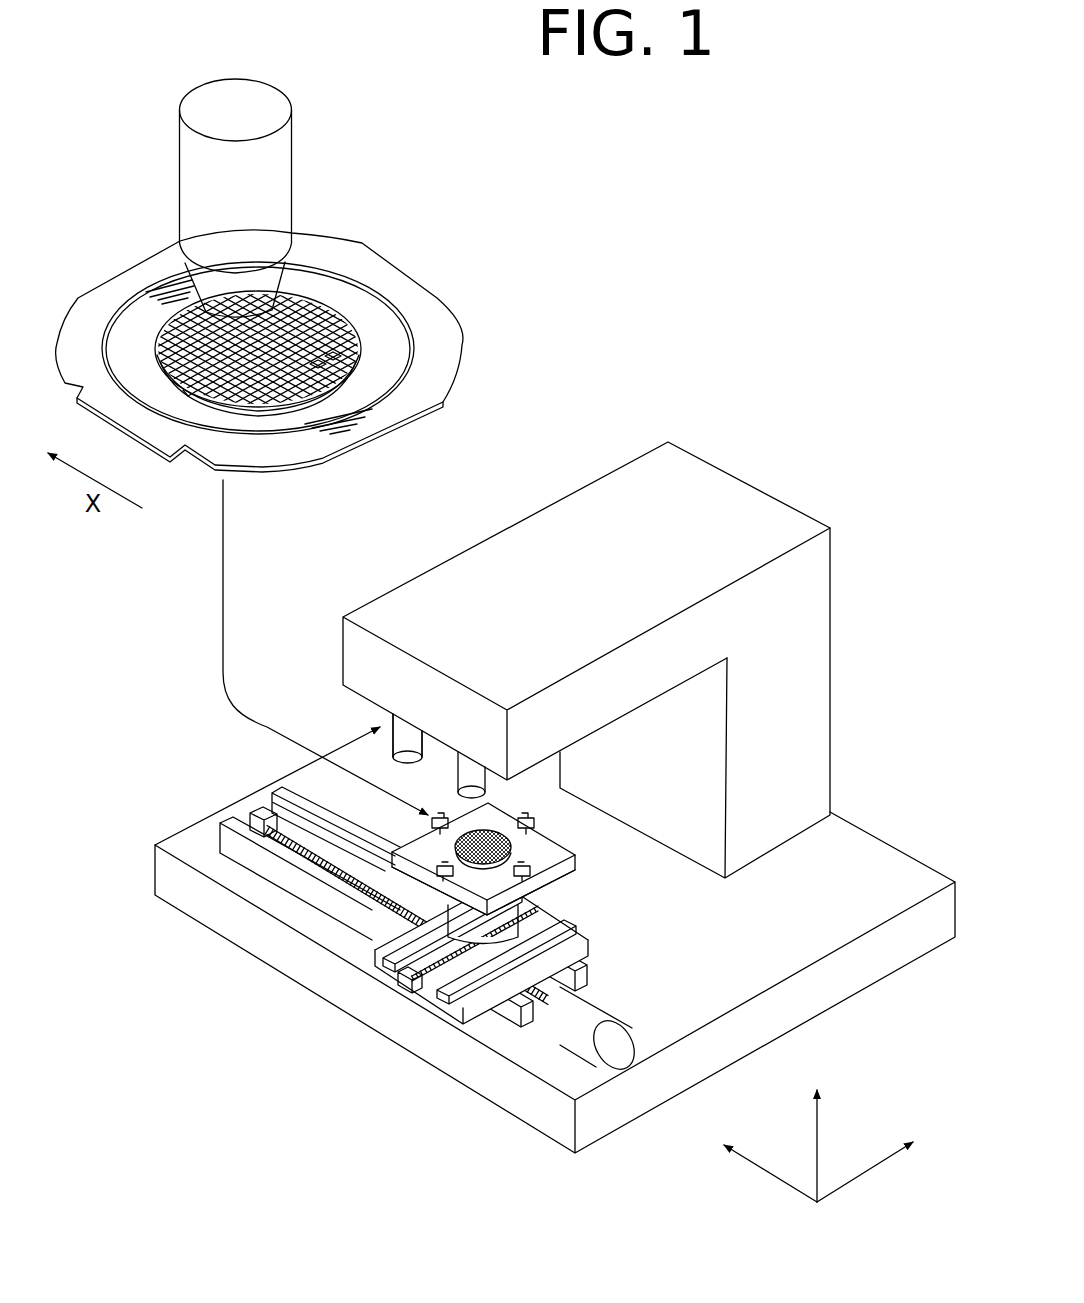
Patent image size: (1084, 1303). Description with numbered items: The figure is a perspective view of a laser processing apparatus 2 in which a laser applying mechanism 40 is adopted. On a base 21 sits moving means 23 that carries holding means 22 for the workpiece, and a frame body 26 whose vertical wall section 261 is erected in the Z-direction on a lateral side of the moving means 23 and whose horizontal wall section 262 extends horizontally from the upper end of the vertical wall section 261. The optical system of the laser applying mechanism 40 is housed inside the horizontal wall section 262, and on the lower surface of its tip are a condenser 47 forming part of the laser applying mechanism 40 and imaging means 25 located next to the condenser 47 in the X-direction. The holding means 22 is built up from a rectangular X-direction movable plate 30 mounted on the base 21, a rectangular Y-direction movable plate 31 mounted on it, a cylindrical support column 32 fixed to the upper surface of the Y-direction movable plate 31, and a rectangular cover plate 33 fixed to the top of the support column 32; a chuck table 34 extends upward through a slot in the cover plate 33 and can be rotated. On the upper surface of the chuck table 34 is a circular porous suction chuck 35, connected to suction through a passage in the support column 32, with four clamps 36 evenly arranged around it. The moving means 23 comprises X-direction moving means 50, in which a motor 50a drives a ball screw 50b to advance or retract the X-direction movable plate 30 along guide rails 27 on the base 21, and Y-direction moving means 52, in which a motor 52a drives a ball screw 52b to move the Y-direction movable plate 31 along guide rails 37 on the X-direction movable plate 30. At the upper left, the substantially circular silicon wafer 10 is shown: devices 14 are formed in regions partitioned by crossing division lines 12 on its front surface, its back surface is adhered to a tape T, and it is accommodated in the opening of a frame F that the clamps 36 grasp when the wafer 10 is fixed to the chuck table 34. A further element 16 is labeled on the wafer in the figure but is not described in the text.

The laser processing apparatus 2 is at (556, 805).
The wafer 10 is at (261, 358).
The division lines (streets) 12 is at (320, 382).
The devices 14 is at (320, 318).
The outer peripheral edge of wafer 16 is at (262, 413).
The frame F is at (433, 327).
The protective tape (dicing tape) T is at (387, 370).
The base 21 is at (880, 860).
The holding means 22 is at (453, 962).
The moving means 23 is at (453, 903).
The imaging means 25 is at (466, 782).
The frame body 26 is at (632, 643).
The vertical wall section 261 is at (810, 657).
The horizontal wall section 262 is at (732, 500).
The guide rails 27 is at (282, 790).
The X-direction movable plate 30 is at (392, 962).
The Y-direction movable plate 31 is at (505, 1010).
The support column 32 is at (490, 945).
The cover plate 33 is at (470, 940).
The chuck table 34 is at (455, 862).
The suction chuck 35 is at (418, 943).
The clamps 36 is at (460, 905).
The guide rails 37 is at (408, 985).
The laser applying mechanism 40 is at (380, 723).
The condenser 47 is at (268, 175).
The X-direction moving means 50 is at (488, 951).
The motor 50a is at (598, 1008).
The ball screw 50b is at (560, 957).
The Y-direction moving means 52 is at (598, 952).
The motor 52a is at (575, 893).
The ball screw 52b is at (565, 915).